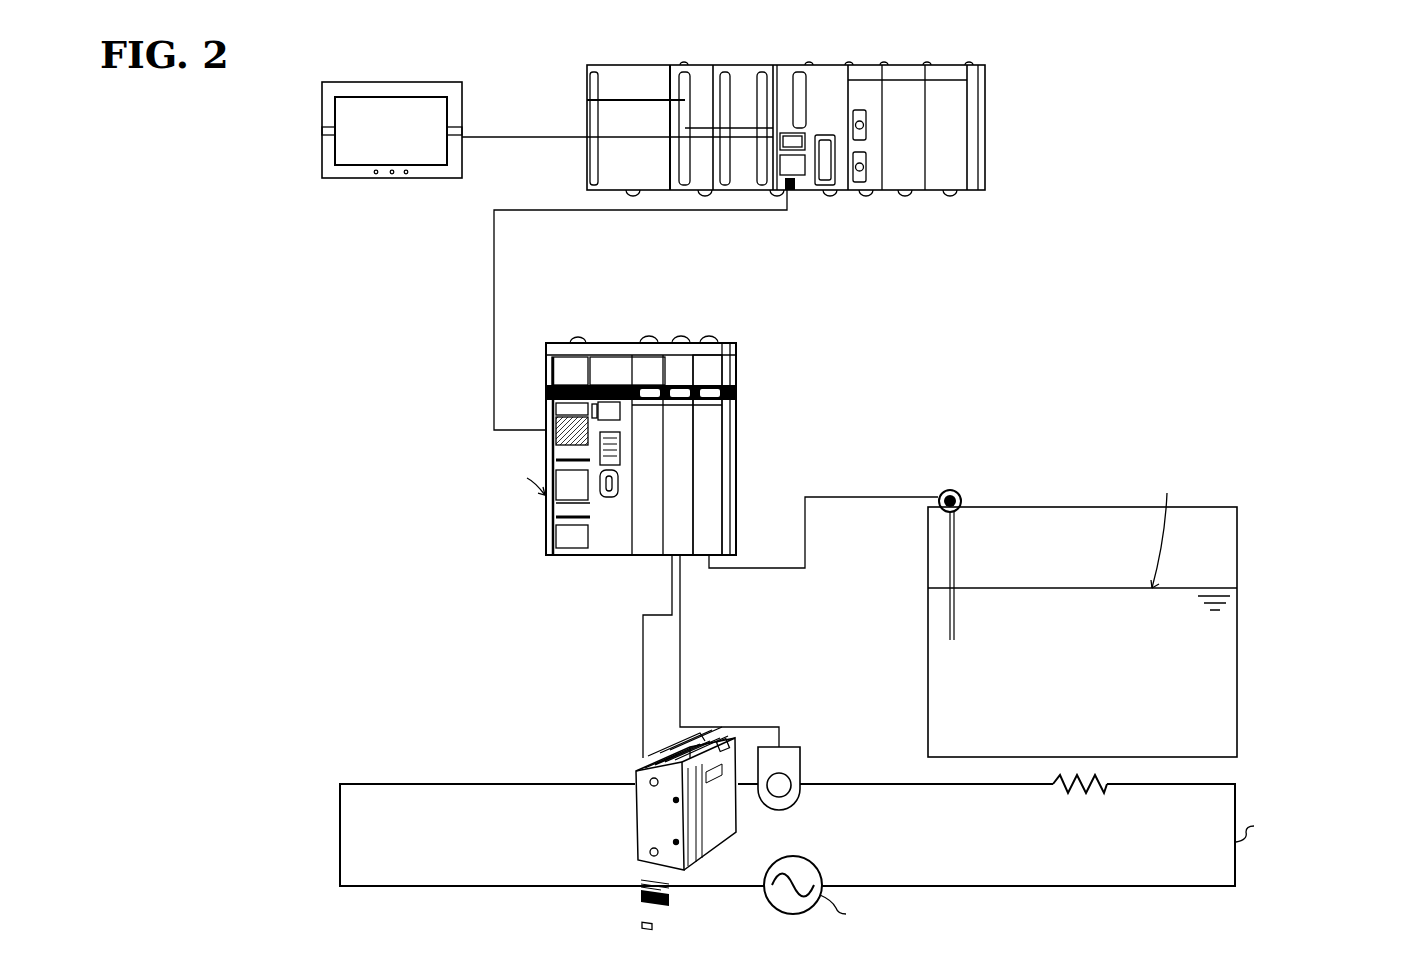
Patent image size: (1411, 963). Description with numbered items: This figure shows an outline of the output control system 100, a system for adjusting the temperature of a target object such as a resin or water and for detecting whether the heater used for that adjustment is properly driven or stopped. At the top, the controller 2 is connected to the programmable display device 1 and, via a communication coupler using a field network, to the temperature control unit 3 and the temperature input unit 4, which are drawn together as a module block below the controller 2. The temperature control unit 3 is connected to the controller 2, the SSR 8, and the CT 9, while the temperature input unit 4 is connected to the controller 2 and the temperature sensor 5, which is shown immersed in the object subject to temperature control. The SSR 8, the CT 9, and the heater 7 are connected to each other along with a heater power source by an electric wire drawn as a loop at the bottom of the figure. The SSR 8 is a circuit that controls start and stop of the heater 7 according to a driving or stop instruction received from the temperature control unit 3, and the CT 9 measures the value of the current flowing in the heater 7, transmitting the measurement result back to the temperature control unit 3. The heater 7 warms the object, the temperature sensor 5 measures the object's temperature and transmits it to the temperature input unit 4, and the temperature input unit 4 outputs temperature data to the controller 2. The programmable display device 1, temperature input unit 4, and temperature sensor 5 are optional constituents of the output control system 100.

The programmable display device 1 is at (345, 82).
The controller 2 is at (987, 100).
The temperature control unit 3 is at (690, 335).
The temperature input unit 4 is at (722, 338).
The temperature sensor 5 is at (960, 493).
The heater 7 is at (1093, 792).
The SSR 8 is at (636, 840).
The CT 9 is at (800, 800).
The output control system 100 is at (1207, 80).